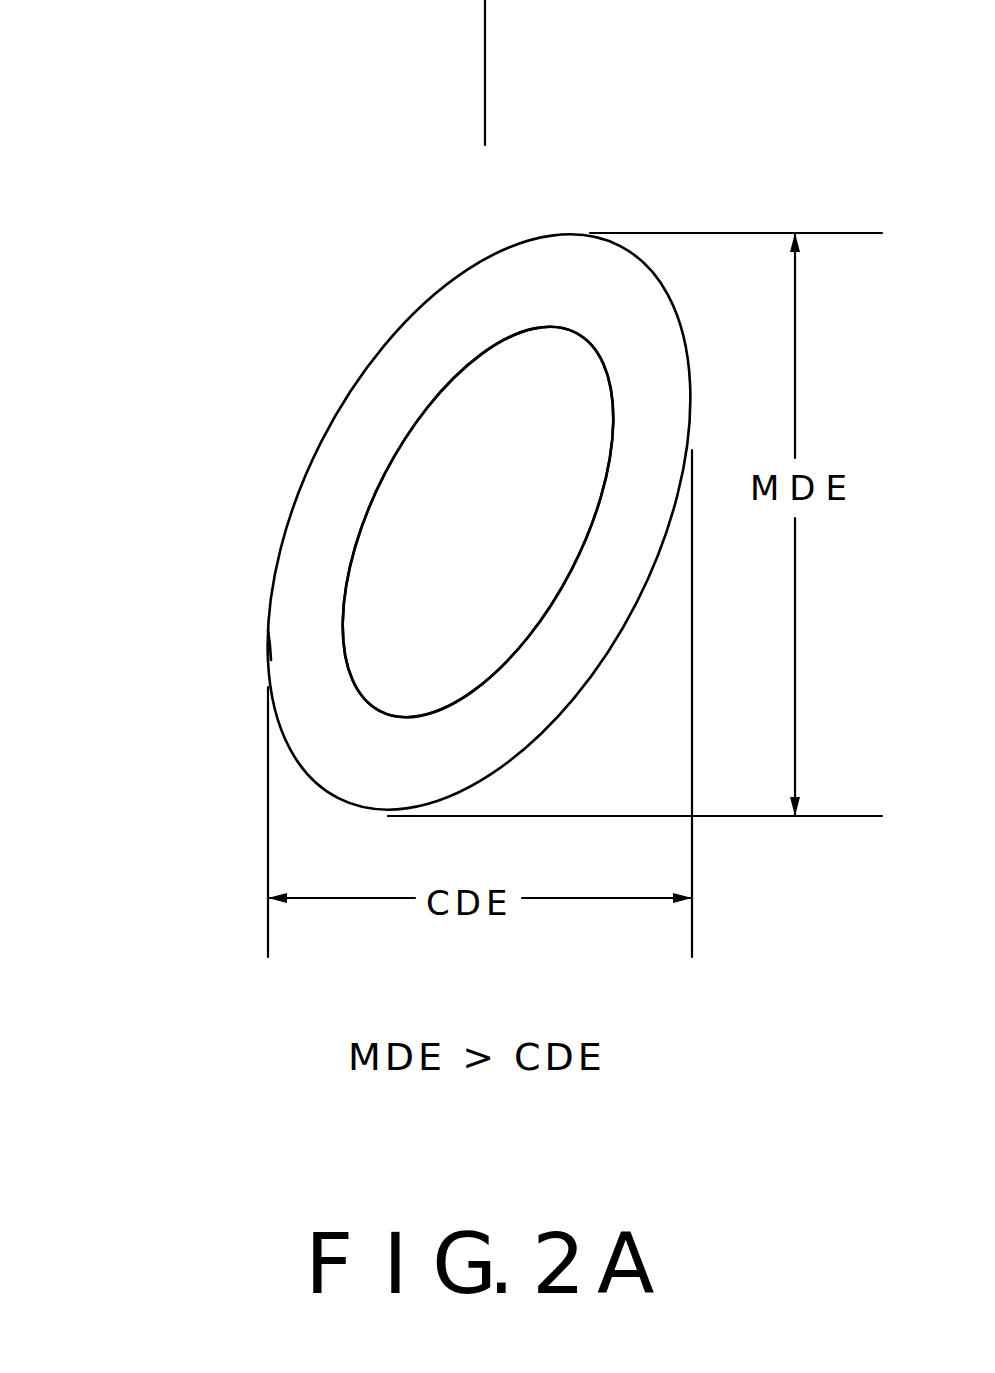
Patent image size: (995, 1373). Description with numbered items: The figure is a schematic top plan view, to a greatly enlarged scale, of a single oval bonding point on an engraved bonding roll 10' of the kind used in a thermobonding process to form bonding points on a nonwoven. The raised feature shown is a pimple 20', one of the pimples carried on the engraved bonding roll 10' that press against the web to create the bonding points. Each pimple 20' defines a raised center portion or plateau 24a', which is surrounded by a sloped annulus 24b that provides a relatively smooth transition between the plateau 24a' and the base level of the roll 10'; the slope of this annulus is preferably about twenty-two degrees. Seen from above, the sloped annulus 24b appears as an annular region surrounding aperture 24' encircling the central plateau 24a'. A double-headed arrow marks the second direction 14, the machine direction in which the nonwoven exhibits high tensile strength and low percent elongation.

The second direction 14 is at (485, 95).
The pimple 20' is at (479, 521).
The annular region surrounding aperture 24' is at (435, 522).
The plateau 24a' is at (392, 522).
The sloped annulus 24b is at (270, 630).
The engraved bonding roll 10' is at (616, 837).